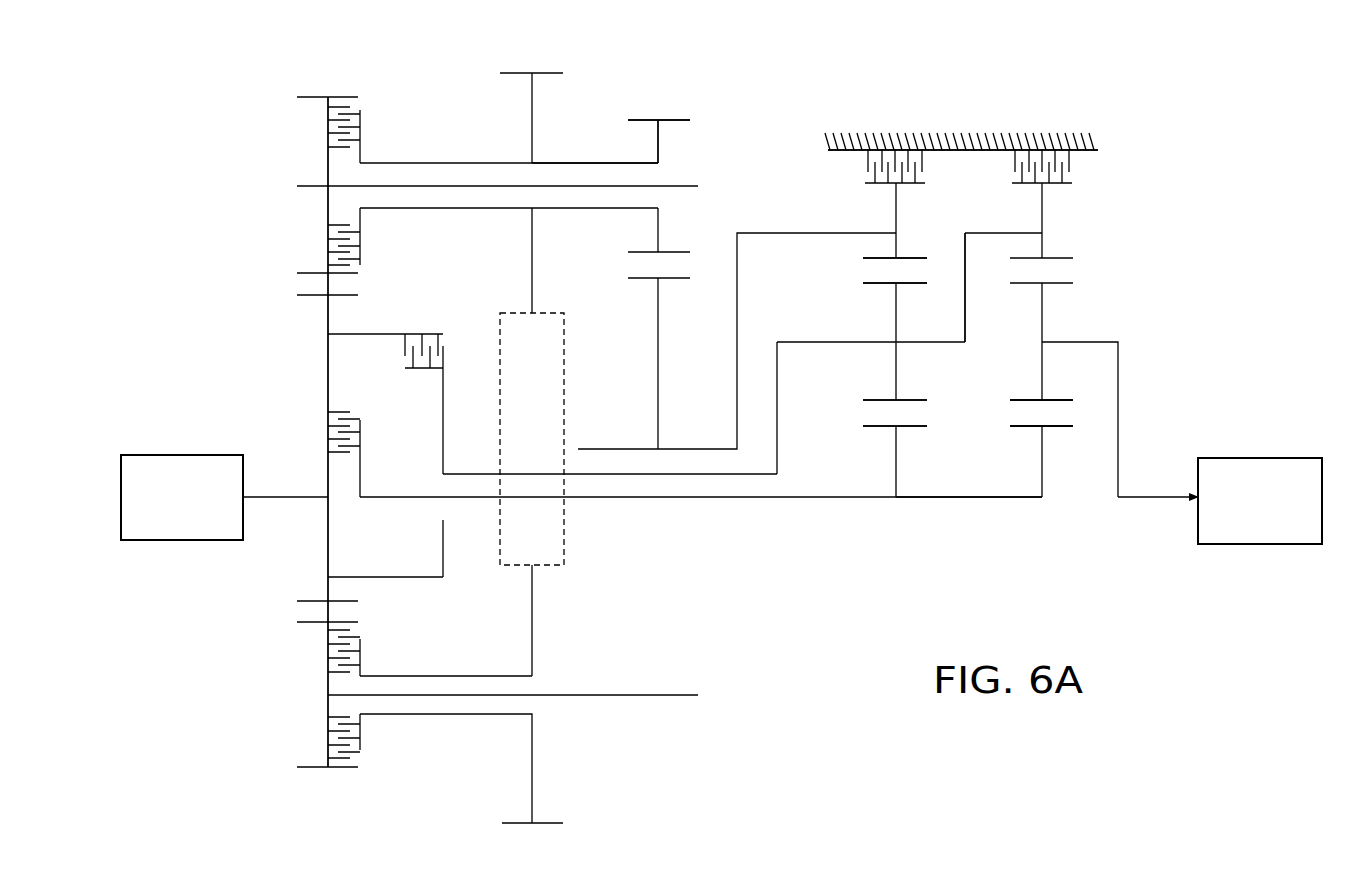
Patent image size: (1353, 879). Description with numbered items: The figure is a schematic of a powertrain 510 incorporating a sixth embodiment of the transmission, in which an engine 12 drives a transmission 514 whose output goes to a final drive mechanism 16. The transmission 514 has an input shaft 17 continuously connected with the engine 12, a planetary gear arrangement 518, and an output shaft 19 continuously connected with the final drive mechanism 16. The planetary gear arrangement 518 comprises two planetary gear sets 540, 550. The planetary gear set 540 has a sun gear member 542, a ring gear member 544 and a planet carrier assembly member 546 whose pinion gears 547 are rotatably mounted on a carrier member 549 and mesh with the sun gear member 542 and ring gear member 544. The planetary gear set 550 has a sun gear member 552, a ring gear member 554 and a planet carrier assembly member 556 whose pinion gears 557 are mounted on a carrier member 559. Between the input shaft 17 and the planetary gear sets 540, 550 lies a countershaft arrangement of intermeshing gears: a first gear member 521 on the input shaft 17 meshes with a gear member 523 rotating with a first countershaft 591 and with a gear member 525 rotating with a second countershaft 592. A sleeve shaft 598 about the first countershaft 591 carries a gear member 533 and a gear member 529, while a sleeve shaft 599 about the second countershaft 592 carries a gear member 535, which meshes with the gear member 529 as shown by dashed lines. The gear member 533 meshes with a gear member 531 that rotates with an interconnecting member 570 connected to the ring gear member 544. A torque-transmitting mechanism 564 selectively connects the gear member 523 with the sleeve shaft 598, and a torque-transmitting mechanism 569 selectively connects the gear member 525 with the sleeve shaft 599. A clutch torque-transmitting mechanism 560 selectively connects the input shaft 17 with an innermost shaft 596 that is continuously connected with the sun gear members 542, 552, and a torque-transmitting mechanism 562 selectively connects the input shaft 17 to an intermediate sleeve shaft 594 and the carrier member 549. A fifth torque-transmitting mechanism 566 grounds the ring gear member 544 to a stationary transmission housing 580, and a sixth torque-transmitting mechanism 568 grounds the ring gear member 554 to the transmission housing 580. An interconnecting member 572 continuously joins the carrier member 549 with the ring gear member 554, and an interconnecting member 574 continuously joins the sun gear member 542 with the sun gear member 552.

The powertrain 510 is at (194, 150).
The transmission 514 is at (613, 52).
The planetary gear arrangement 518 is at (956, 90).
The engine 12 is at (190, 443).
The final drive mechanism 16 is at (1251, 443).
The input shaft 17 is at (267, 497).
The output shaft 19 is at (1157, 497).
The first gear member 521 is at (328, 372).
The gear member 523 is at (328, 213).
The gear member 525 is at (328, 683).
The gear member 529 is at (532, 255).
The gear member 531 is at (659, 343).
The gear member 533 is at (660, 150).
The gear member 535 is at (532, 608).
The planetary gear set 540 is at (908, 434).
The sun gear member 542 is at (908, 428).
The ring gear member 544 is at (912, 258).
The planet carrier assembly member 546 is at (861, 325).
The pinion gears 547 is at (896, 378).
The carrier member 549 is at (925, 342).
The planetary gear set 550 is at (1051, 434).
The sun gear member 552 is at (1052, 428).
The ring gear member 554 is at (1058, 258).
The planet carrier assembly member 556 is at (1030, 331).
The pinion gears 557 is at (1042, 378).
The carrier member 559 is at (1087, 342).
The torque-transmitting mechanism 560 is at (372, 428).
The torque-transmitting mechanism 562 is at (454, 342).
The torque-transmitting mechanism 564 is at (372, 120).
The fifth torque-transmitting mechanism 566 is at (862, 167).
The sixth torque-transmitting mechanism 568 is at (1076, 165).
The torque-transmitting mechanism 569 is at (369, 734).
The interconnecting member 570 is at (617, 449).
The interconnecting member 572 is at (990, 233).
The interconnecting member 574 is at (1008, 497).
The transmission housing 580 is at (853, 133).
The first countershaft 591 is at (438, 186).
The second countershaft 592 is at (468, 697).
The intermediate sleeve shaft 594 is at (478, 474).
The innermost shaft 596 is at (483, 497).
The sleeve shaft 598 is at (566, 163).
The sleeve shaft 599 is at (469, 677).